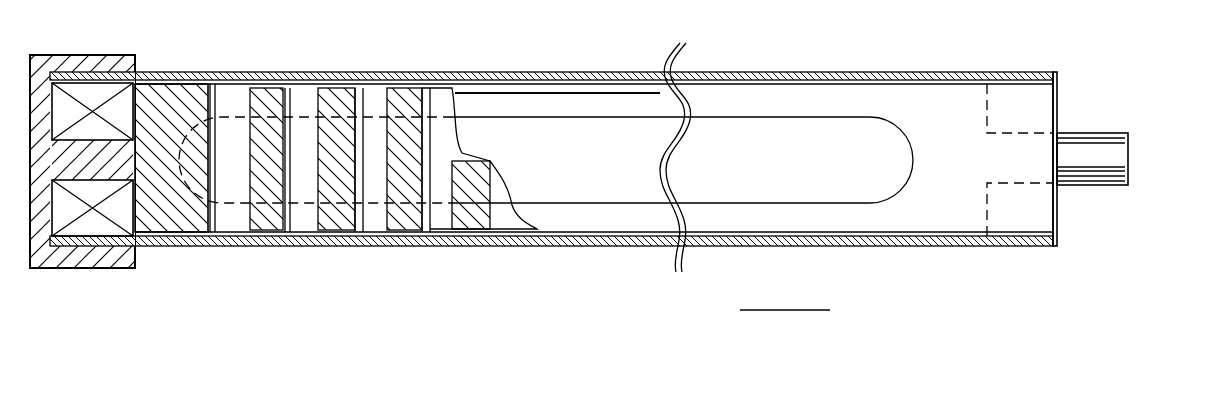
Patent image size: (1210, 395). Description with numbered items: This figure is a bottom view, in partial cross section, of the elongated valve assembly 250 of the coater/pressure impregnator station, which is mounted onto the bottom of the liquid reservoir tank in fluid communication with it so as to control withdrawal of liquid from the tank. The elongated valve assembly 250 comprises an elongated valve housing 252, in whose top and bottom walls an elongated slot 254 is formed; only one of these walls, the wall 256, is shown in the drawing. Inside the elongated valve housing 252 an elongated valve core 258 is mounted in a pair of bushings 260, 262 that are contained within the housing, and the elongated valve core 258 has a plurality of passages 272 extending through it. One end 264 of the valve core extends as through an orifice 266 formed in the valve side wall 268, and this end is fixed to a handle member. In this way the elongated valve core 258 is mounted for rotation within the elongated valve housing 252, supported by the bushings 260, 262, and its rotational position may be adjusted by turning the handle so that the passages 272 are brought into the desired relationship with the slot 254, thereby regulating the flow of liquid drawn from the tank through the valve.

The elongated valve assembly 250 is at (540, 60).
The elongated valve housing 252 is at (893, 72).
The elongated slot 254 is at (582, 195).
The bottom wall of the valve housing 256 is at (875, 223).
The elongated valve core 258 is at (192, 223).
The bushing 260 is at (92, 220).
The bushing 262 is at (1008, 223).
The end of the valve core 264 is at (1113, 157).
The orifice 266 is at (1057, 157).
The valve side wall 268 is at (1038, 107).
The passages 272 is at (367, 223).